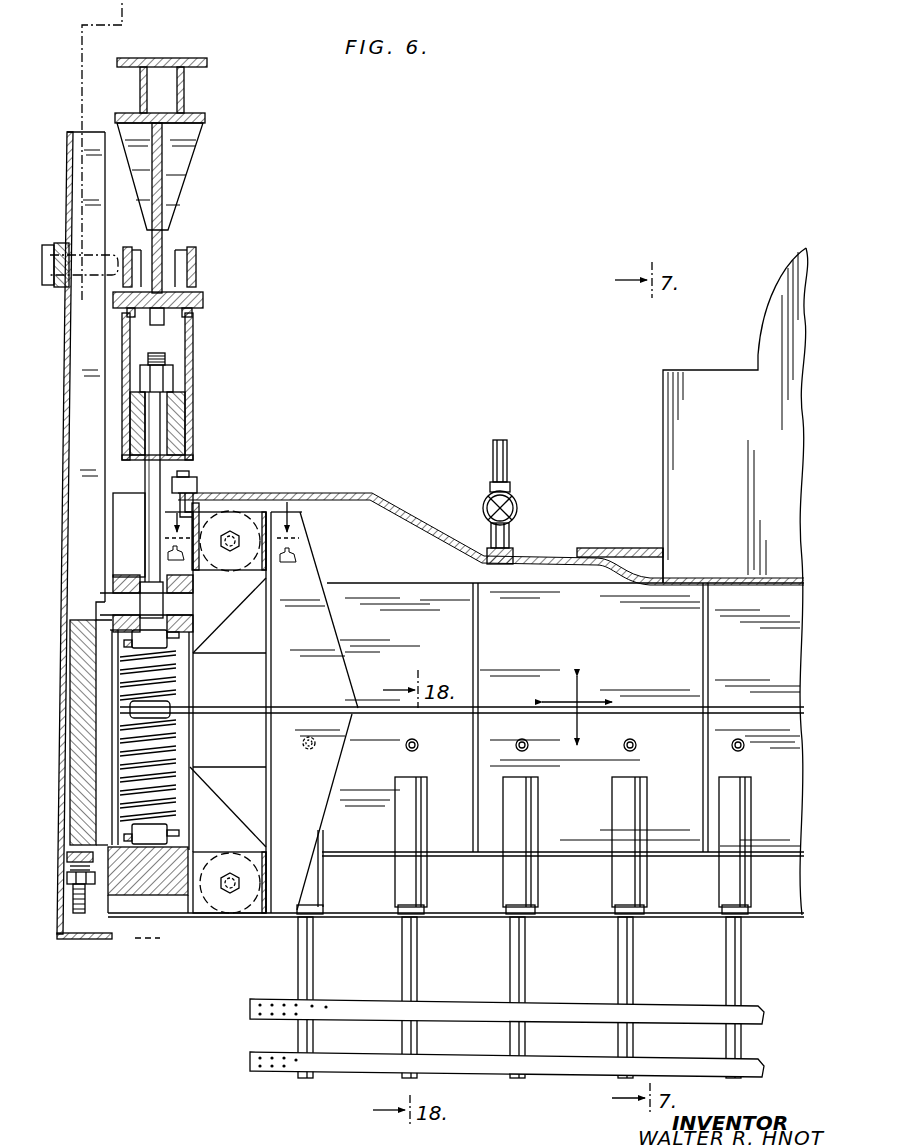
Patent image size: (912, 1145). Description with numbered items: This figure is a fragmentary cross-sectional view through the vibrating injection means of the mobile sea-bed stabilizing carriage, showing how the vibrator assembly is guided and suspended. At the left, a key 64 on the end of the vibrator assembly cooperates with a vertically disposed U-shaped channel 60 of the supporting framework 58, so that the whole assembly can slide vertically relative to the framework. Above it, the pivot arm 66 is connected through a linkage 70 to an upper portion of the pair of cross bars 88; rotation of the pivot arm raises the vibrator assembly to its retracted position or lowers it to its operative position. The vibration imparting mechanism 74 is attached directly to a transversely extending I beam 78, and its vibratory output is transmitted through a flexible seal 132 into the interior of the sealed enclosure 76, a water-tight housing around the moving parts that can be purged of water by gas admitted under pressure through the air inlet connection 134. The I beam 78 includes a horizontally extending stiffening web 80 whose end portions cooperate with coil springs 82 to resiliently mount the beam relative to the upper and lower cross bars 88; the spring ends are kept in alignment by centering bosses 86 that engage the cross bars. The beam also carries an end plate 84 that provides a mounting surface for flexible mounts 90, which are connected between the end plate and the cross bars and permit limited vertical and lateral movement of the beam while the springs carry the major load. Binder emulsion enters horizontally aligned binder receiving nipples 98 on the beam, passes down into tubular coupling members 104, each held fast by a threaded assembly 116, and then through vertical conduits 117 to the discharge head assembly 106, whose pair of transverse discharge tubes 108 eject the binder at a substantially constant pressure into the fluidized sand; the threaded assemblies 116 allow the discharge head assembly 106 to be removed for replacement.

The supporting framework 58 is at (54, 940).
The U-shaped channel 60 is at (64, 700).
The key 64 is at (84, 616).
The pivot arm 66 is at (170, 48).
The linkage 70 is at (195, 344).
The vibration imparting mechanism 74 is at (660, 432).
The sealed enclosure 76 is at (320, 493).
The I beam 78 is at (394, 582).
The stiffening web 80 is at (226, 707).
The coil spring 82 is at (172, 679).
The end plate 84 is at (272, 660).
The centering boss 86 is at (175, 643).
The cross bar 88 is at (116, 576).
The flexible mount 90 is at (220, 518).
The binder receiving nipple 98 is at (406, 744).
The tubular coupling member 104 is at (318, 878).
The discharge head assembly 106 is at (580, 977).
The transverse discharge tube 108 is at (250, 1052).
The threaded assembly 116 is at (398, 908).
The vertical conduit 117 is at (298, 948).
The flexible seal 132 is at (620, 557).
The air inlet connection 134 is at (488, 494).